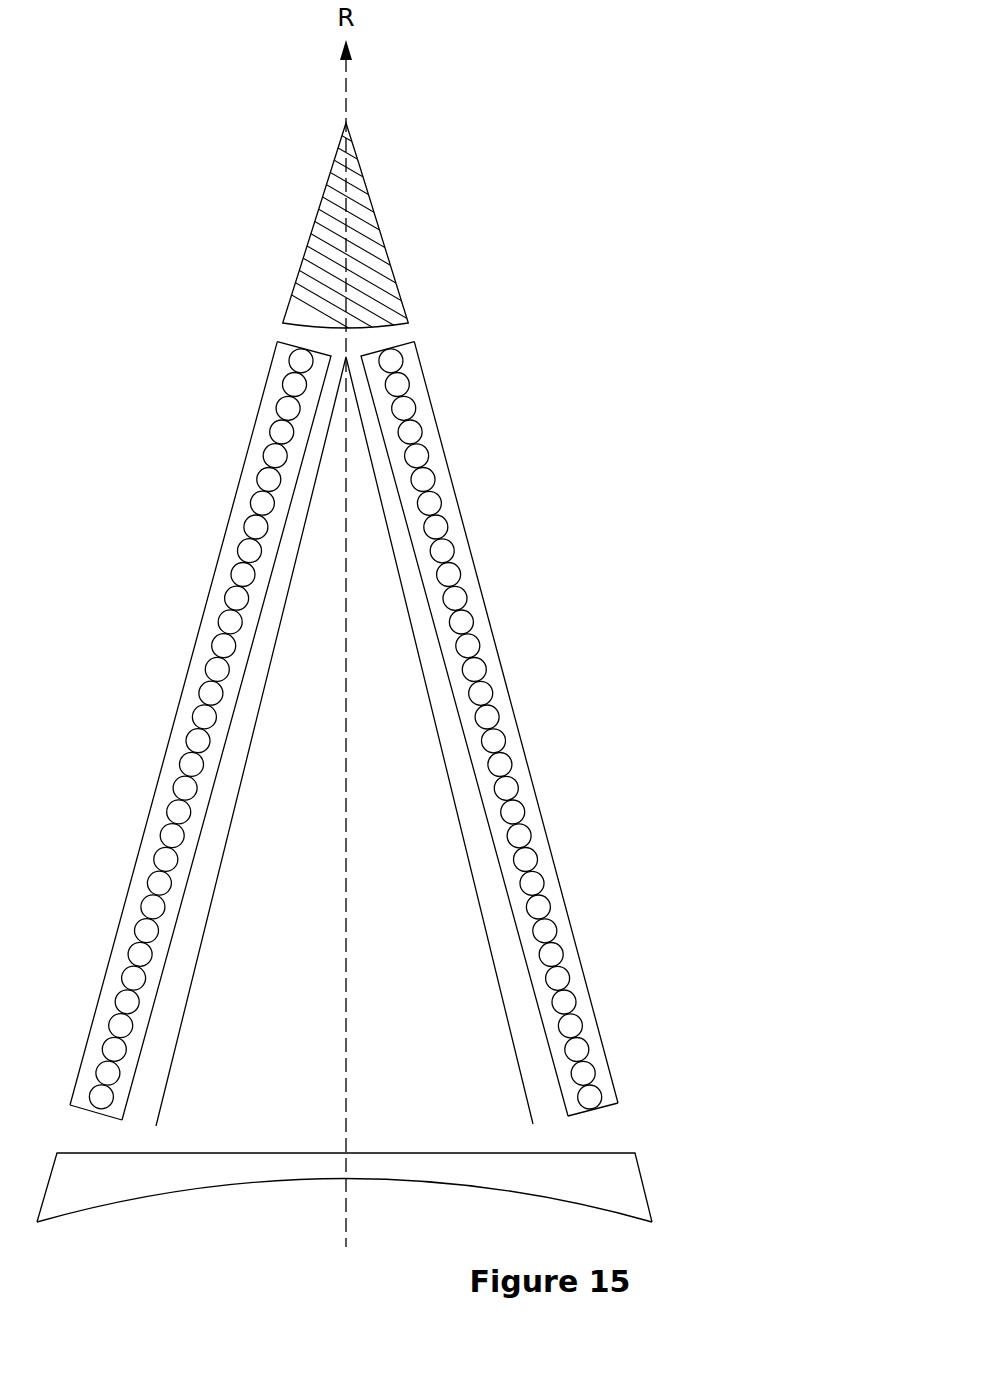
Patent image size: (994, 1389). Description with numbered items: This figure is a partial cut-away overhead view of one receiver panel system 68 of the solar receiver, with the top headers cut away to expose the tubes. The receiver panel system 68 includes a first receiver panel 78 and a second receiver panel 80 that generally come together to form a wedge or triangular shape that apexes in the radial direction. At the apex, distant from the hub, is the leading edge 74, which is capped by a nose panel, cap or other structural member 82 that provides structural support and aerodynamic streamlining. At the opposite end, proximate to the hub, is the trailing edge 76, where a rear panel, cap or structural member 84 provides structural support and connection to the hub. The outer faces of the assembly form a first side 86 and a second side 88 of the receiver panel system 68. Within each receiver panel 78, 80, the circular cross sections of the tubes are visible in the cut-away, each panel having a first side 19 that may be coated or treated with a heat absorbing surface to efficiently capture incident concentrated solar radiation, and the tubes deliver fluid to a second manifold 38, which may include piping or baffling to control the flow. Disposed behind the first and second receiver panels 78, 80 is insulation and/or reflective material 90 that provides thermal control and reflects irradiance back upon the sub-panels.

The receiver panel system 68 is at (546, 299).
The leading edge 74 is at (346, 123).
The nose panel 82 is at (373, 207).
The first receiver panel 78 is at (222, 542).
The second receiver panel 80 is at (458, 497).
The first side 86 is at (172, 725).
The second side 88 is at (519, 730).
The second manifold 38 is at (98, 998).
The insulation or reflective material 90 is at (193, 980).
The first side 19 is at (214, 619).
The rear panel 84 is at (643, 1178).
The trailing edge 76 is at (253, 1182).